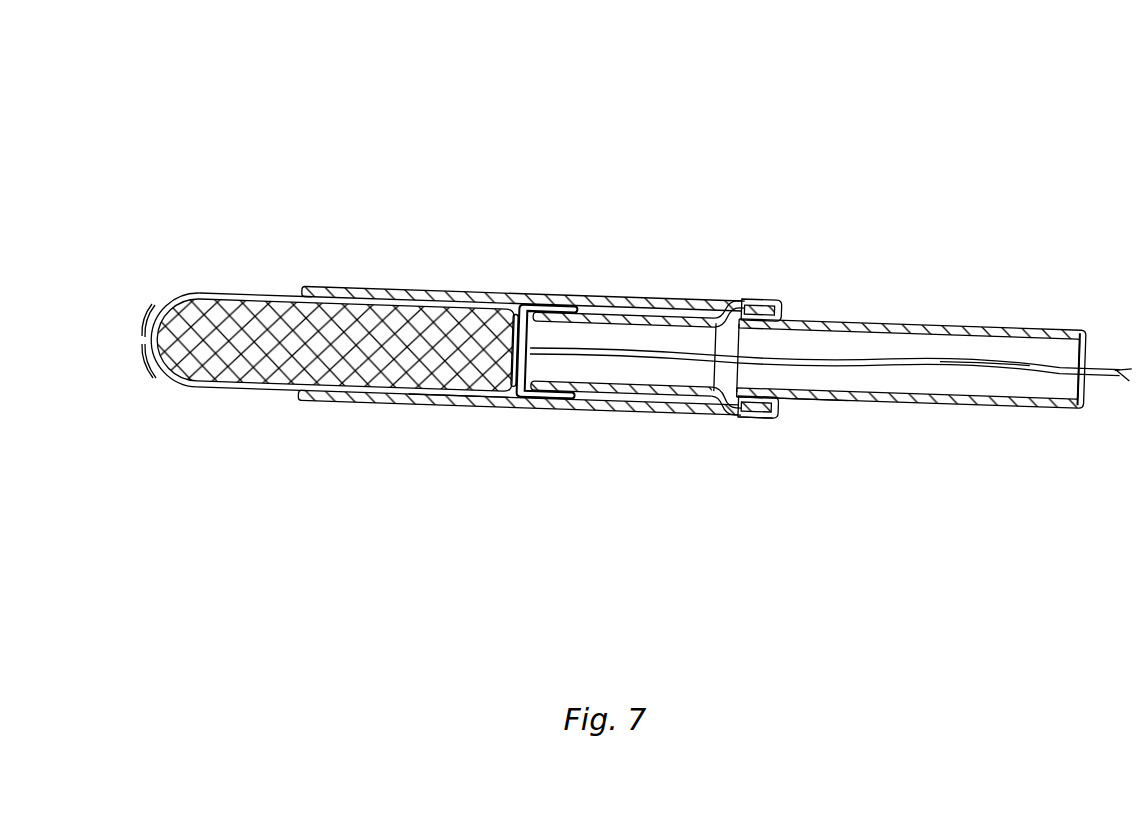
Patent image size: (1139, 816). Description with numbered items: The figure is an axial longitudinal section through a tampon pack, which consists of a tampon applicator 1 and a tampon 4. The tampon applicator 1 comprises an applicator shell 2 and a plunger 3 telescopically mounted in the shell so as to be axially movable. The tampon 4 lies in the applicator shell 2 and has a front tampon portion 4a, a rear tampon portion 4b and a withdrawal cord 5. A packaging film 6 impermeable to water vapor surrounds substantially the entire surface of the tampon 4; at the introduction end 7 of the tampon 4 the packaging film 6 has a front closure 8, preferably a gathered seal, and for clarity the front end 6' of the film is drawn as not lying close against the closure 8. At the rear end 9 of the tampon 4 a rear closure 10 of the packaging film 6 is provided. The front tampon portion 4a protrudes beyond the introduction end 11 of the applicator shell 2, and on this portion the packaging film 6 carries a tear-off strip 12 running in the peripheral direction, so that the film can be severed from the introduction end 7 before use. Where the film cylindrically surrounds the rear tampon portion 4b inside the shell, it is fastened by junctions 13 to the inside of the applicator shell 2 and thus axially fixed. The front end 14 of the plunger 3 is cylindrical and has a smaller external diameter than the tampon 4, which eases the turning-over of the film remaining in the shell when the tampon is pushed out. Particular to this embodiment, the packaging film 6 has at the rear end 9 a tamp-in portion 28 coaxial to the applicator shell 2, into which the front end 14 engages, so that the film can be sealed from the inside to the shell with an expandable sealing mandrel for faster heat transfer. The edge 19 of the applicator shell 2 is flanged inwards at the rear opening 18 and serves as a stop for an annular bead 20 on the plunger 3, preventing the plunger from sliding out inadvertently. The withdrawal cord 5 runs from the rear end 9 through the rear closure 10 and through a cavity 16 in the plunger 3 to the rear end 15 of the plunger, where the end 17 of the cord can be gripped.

The tampon applicator 1 is at (823, 400).
The applicator shell 2 is at (660, 298).
The plunger 3 is at (898, 330).
The tampon 4 is at (357, 303).
The front tampon portion 4a is at (214, 355).
The rear tampon portion 4b is at (443, 353).
The withdrawal cord 5 is at (975, 366).
The packaging film 6 is at (175, 260).
The front end of the packaging film 6' is at (146, 200).
The introduction end of the tampon 7 is at (162, 382).
The front closure 8 is at (141, 316).
The rear end of the tampon 9 is at (488, 390).
The rear closure 10 is at (521, 392).
The introduction end of the applicator shell 11 is at (307, 288).
The tear-off strip 12 is at (283, 297).
The junctions 13 is at (551, 398).
The front end of the plunger 14 is at (534, 305).
The rear end of the plunger 15 is at (1085, 332).
The cavity 16 is at (977, 388).
The end of the withdrawal cord 17 is at (1121, 372).
The rear opening 18 is at (783, 316).
The flanged edge 19 is at (757, 308).
The annular bead 20 is at (727, 400).
The tamp-in portion 28 is at (516, 398).